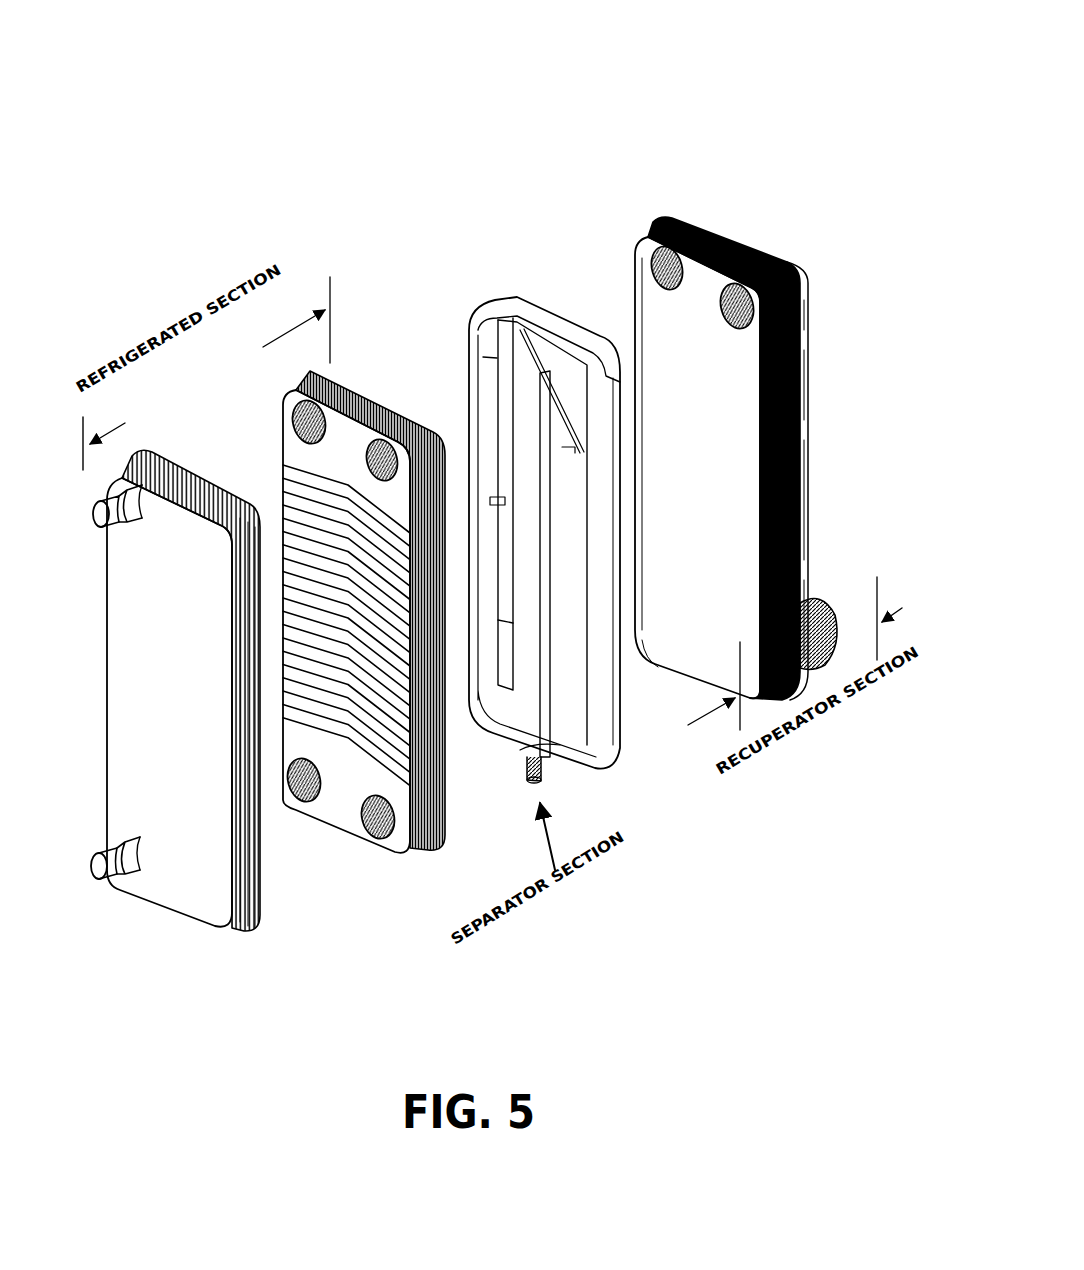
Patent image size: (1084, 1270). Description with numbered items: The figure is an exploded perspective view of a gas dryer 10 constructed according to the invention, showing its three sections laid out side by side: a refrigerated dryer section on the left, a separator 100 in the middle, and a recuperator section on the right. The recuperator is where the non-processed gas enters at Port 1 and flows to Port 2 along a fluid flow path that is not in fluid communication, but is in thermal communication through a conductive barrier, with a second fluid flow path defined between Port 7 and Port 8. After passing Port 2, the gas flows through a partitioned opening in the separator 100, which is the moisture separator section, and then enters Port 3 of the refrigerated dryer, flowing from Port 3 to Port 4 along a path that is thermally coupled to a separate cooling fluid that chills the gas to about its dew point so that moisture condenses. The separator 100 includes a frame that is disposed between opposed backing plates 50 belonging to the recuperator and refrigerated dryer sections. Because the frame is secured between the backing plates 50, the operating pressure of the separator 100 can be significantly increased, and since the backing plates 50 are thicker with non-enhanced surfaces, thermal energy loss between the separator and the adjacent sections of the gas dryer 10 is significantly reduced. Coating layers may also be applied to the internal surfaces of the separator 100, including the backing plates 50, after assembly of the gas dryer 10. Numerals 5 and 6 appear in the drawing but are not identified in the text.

The gas dryer 10 is at (486, 132).
The Port 1 is at (817, 603).
The Port 2 is at (797, 281).
The Port 3 is at (373, 440).
The Port 4 is at (378, 822).
The separator drain stub 5 is at (590, 748).
The separator frame 6 is at (477, 337).
The Port 7 is at (660, 253).
The Port 8 is at (805, 455).
The backing plates 50 is at (443, 810).
The separator 100 is at (508, 298).